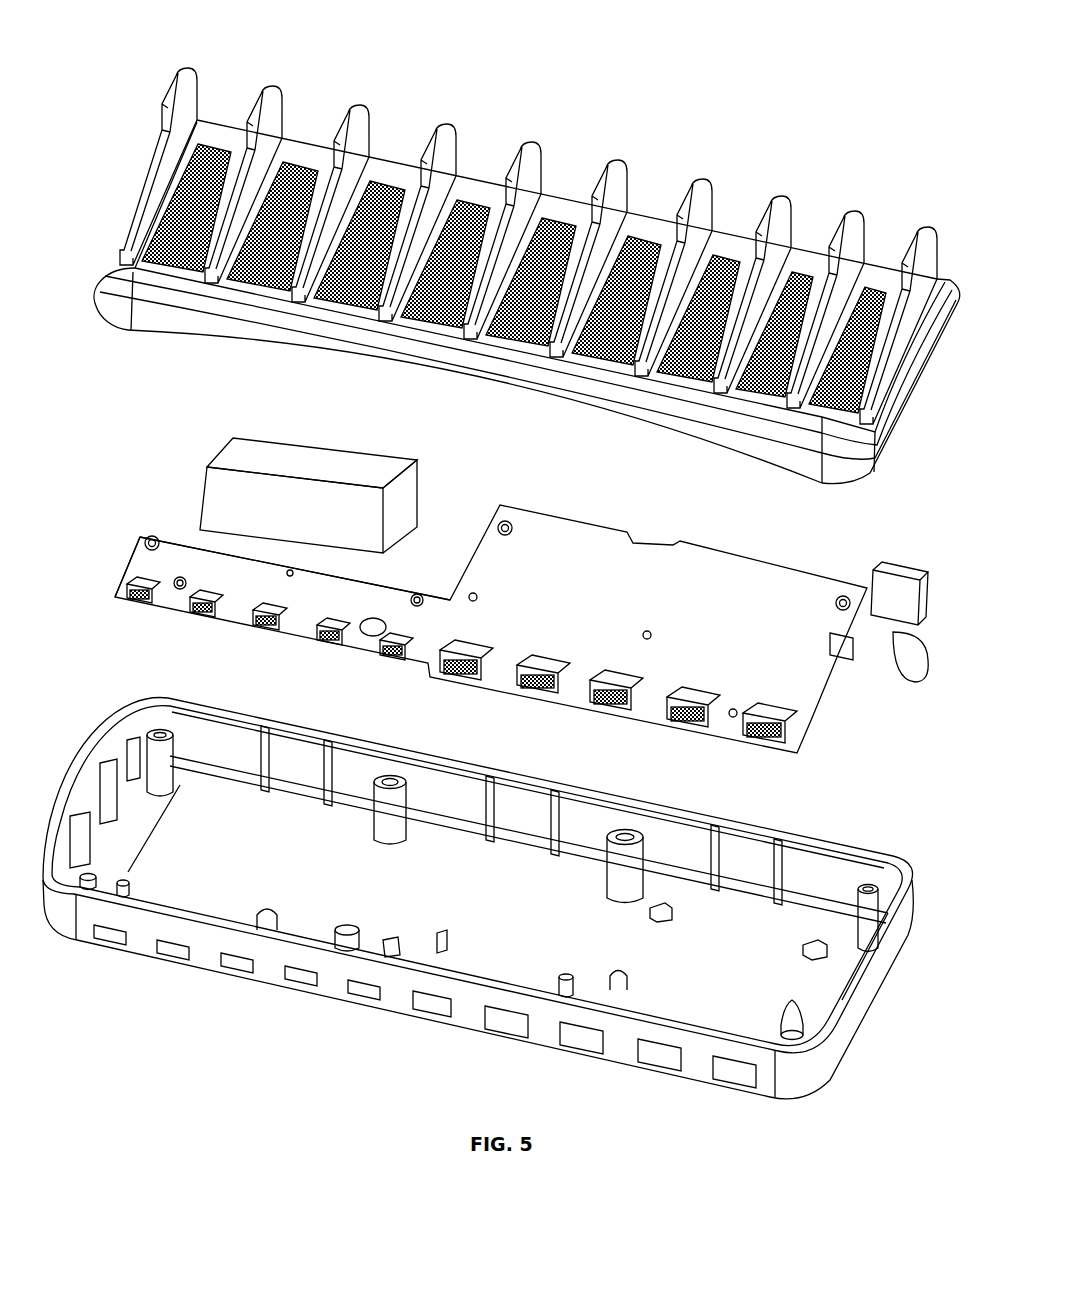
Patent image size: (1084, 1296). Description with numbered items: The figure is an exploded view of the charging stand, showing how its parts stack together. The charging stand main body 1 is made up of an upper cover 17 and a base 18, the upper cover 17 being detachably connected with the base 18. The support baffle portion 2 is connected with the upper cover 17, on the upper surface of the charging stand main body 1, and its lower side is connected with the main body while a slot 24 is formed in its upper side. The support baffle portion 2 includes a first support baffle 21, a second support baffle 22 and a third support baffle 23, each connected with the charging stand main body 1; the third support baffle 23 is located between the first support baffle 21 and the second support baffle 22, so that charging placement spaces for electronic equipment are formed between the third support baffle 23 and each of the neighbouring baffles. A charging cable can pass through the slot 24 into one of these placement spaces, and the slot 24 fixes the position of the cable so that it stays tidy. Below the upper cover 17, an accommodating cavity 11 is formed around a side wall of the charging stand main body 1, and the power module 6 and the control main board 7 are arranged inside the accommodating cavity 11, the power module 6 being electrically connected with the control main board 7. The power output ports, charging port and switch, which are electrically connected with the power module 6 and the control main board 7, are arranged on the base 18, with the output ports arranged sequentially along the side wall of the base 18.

The charging stand main body 1 is at (350, 1027).
The support baffle portion 2 is at (517, 132).
The power module 6 is at (293, 507).
The control main board 7 is at (733, 603).
The accommodating cavity 11 is at (217, 748).
The upper cover 17 is at (390, 163).
The base 18 is at (217, 947).
The first support baffle 21 is at (518, 210).
The second support baffle 22 is at (862, 263).
The third support baffle 23 is at (718, 258).
The slot 24 is at (697, 250).